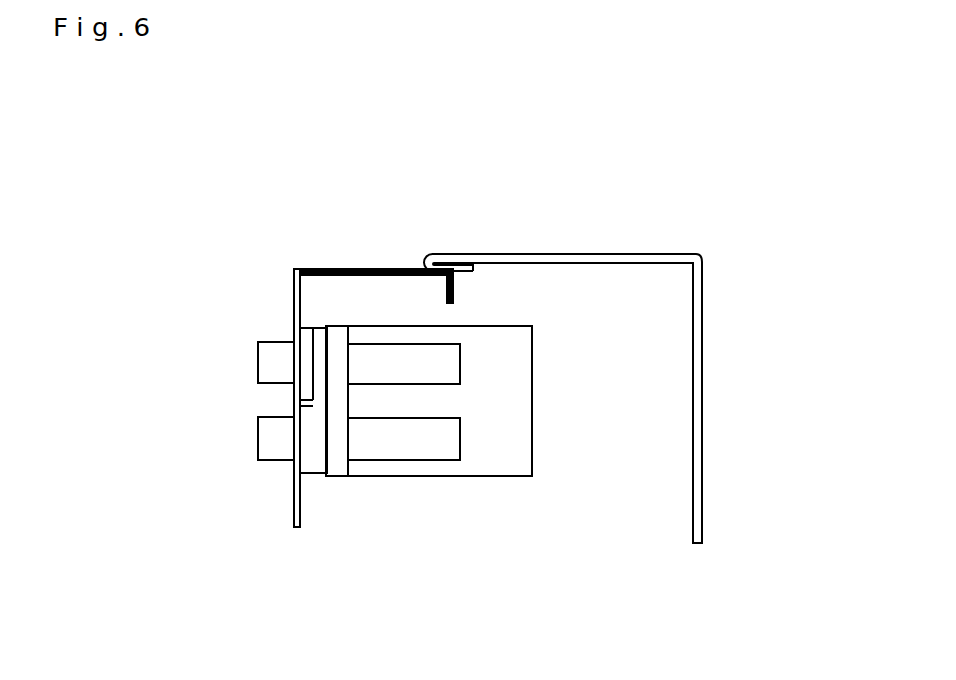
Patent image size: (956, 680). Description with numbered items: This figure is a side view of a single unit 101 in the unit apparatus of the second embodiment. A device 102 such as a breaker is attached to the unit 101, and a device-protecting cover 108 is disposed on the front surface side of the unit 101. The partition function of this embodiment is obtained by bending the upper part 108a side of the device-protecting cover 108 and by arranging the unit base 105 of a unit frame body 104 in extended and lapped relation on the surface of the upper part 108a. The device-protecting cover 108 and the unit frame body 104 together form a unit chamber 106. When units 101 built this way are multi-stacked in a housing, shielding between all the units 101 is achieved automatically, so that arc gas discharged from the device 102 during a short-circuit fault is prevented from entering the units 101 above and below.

The unit 101 is at (259, 360).
The device 102 is at (392, 476).
The unit frame body 104 is at (673, 252).
The unit base 105 is at (495, 253).
The unit chamber 106 is at (703, 407).
The device-protecting cover 108 is at (278, 310).
The upper part 108a is at (383, 268).